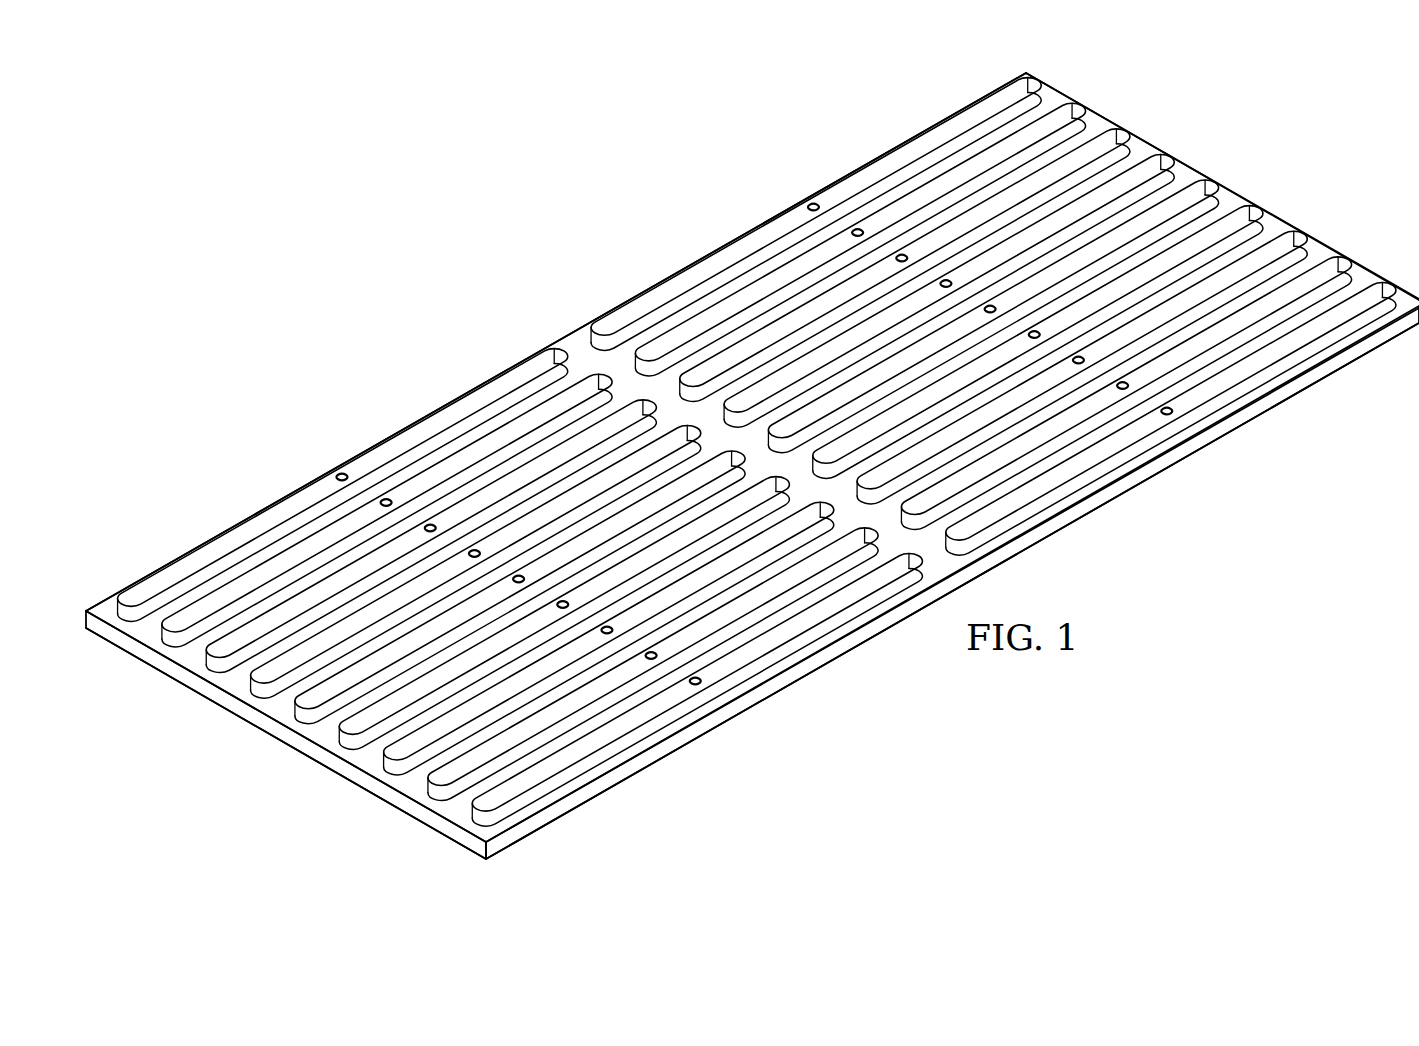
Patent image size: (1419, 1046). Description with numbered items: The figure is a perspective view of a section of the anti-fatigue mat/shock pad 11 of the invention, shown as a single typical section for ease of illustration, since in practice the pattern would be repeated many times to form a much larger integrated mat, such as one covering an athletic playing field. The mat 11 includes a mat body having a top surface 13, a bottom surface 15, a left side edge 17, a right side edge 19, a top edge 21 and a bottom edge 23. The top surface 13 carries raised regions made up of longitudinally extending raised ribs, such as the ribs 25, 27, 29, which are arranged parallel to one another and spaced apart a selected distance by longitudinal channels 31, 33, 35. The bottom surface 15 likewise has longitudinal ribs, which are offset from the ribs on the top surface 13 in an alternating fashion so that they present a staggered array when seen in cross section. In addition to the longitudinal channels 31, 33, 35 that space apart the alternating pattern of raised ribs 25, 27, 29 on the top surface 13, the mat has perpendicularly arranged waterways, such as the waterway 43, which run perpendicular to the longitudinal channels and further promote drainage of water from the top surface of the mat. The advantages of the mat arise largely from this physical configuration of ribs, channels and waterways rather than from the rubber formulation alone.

The anti-fatigue mat/shock pad 11 is at (386, 217).
The top surface 13 is at (612, 760).
The bottom surface 15 is at (567, 815).
The left side edge 17 is at (265, 724).
The right side edge 19 is at (1145, 140).
The top edge 21 is at (575, 334).
The bottom edge 23 is at (735, 712).
The raised rib 25 is at (838, 192).
The raised rib 27 is at (907, 198).
The raised rib 29 is at (984, 210).
The longitudinal channel 31 is at (680, 318).
The longitudinal channel 33 is at (748, 330).
The longitudinal channel 35 is at (820, 338).
The waterway 43 is at (955, 520).